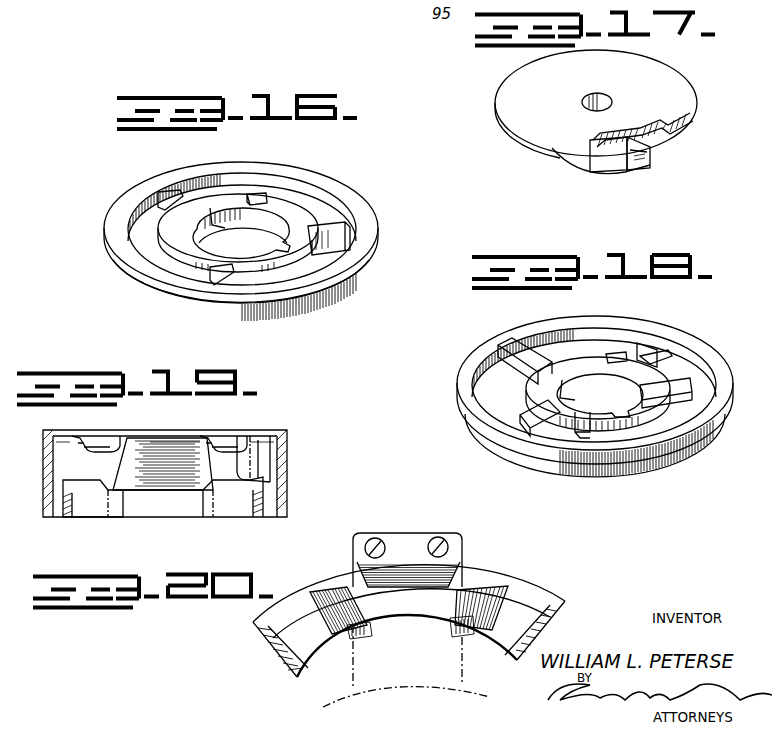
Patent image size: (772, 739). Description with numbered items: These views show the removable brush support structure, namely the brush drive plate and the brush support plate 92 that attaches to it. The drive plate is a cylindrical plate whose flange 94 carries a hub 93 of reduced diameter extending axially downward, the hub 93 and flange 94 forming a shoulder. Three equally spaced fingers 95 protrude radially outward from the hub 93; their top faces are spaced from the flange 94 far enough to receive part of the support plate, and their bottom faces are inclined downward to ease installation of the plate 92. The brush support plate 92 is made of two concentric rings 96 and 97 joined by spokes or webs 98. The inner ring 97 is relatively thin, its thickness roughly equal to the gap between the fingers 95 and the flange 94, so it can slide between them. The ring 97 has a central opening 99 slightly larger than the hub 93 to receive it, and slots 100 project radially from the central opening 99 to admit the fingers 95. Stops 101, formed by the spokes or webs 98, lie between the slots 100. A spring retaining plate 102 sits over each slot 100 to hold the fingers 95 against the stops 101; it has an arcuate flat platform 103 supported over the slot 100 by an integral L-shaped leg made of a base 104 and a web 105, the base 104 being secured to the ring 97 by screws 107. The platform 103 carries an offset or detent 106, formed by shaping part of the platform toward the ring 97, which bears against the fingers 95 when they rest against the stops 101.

In FIG. 16, the brush support plate 92 is at (366, 222).
In FIG. 17, the hub 93 is at (600, 165).
In FIG. 17, the flange 94 is at (530, 147).
In FIG. 17, the fingers 95 is at (652, 152).
In FIG. 19, the fingers 95 is at (262, 464).
In FIG. 20, the fingers 95 is at (452, 657).
In FIG. 16, the ring 96 is at (343, 197).
In FIG. 18, the ring 96 is at (673, 334).
In FIG. 19, the ring 96 is at (281, 433).
In FIG. 16, the ring 97 is at (289, 200).
In FIG. 18, the ring 97 is at (606, 430).
In FIG. 19, the ring 97 is at (241, 506).
In FIG. 16, the spokes or webs 98 is at (345, 229).
In FIG. 16, the central opening 99 is at (226, 247).
In FIG. 18, the central opening 99 is at (562, 408).
In FIG. 16, the slots 100 is at (252, 192).
In FIG. 18, the slots 100 is at (616, 368).
In FIG. 20, the slots 100 is at (398, 620).
In FIG. 18, the stops 101 is at (556, 358).
In FIG. 18, the spring retaining plate 102 is at (654, 355).
In FIG. 19, the spring retaining plate 102 is at (194, 435).
In FIG. 20, the spring retaining plate 102 is at (457, 560).
In FIG. 19, the platform 103 is at (147, 437).
In FIG. 20, the platform 103 is at (416, 610).
In FIG. 19, the base 104 is at (161, 496).
In FIG. 20, the base 104 is at (452, 540).
In FIG. 19, the web 105 is at (193, 481).
In FIG. 20, the web 105 is at (458, 557).
In FIG. 19, the detent 106 is at (98, 442).
In FIG. 20, the detent 106 is at (494, 592).
In FIG. 20, the screws 107 is at (379, 547).